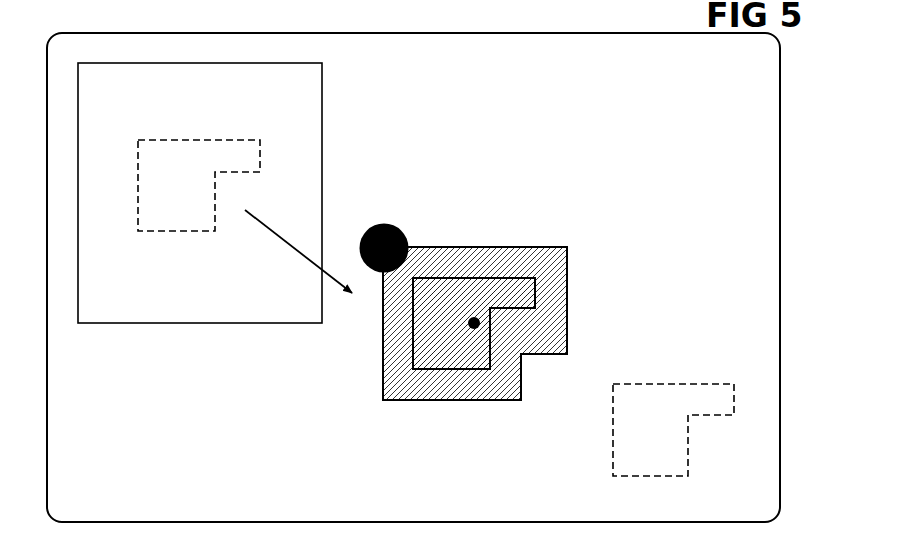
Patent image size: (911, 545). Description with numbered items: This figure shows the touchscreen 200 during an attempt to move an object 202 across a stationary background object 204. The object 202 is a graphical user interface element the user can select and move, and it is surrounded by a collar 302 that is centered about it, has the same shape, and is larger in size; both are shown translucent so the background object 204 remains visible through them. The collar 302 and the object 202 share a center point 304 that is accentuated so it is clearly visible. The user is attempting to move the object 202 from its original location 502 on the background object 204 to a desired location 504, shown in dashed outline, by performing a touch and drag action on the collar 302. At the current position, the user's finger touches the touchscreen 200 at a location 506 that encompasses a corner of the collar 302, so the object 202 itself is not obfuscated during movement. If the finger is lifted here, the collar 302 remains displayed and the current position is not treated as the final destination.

The touchscreen 200 is at (770, 64).
The background object 204 is at (226, 63).
The original location 502 is at (261, 156).
The collar 302 is at (489, 247).
The object 202 is at (448, 369).
The center point 304 is at (480, 323).
The location 506 is at (397, 229).
The desired location 504 is at (685, 384).